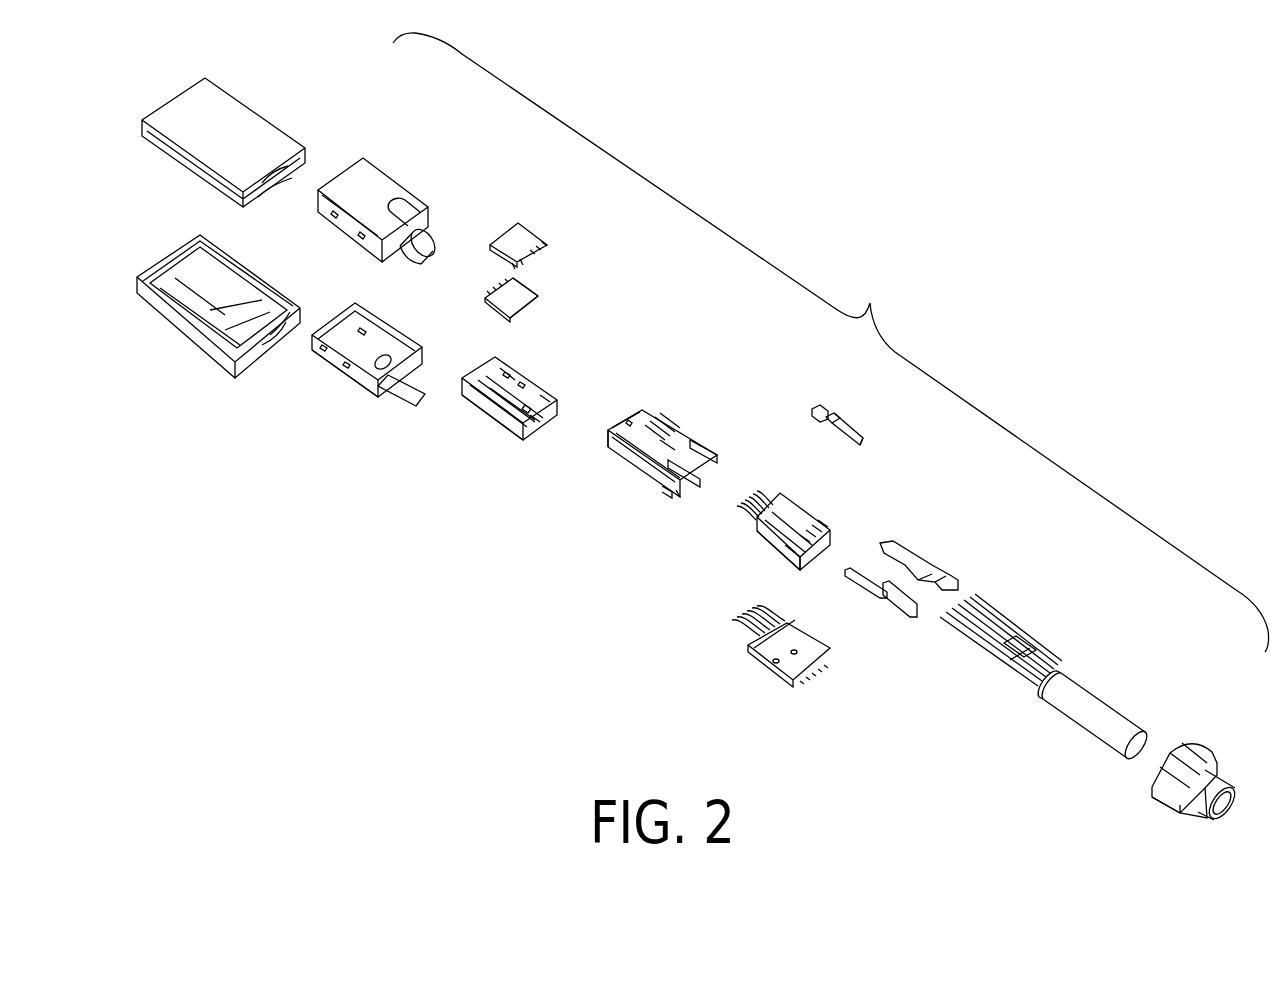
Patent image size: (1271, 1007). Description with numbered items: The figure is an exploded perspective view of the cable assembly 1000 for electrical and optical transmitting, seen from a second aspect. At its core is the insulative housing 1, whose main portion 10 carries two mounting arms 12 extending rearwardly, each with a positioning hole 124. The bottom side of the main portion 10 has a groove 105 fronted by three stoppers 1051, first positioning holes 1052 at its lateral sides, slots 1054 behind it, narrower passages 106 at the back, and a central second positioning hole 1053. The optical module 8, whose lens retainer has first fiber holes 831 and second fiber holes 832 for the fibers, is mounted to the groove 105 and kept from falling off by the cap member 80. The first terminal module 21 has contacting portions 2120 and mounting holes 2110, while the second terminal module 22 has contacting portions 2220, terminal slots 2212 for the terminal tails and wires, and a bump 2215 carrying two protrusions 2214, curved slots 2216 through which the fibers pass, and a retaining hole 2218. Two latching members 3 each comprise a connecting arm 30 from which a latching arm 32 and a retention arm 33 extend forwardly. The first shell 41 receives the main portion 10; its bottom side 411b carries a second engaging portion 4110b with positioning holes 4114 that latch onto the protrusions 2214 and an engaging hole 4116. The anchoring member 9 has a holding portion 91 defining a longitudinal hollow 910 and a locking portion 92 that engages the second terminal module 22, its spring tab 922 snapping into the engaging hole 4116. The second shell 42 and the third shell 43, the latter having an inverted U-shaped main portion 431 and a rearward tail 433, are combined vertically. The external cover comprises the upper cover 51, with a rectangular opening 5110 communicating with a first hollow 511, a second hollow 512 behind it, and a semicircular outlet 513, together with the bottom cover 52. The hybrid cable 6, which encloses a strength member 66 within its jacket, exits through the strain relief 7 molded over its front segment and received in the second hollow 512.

The cable assembly 1000 is at (831, 342).
The bottom cover 52 is at (268, 95).
The second shell 42 is at (408, 170).
The upper cover 51 is at (204, 304).
The rectangular shaped opening 5110 is at (163, 272).
The first hollow 511 is at (182, 292).
The second hollow 512 is at (250, 330).
The semicircular shaped outlet 513 is at (263, 348).
The third shell 43 is at (376, 373).
The inverted U-shaped main portion 431 is at (345, 368).
The tail 433 is at (397, 393).
The cap member 80 is at (540, 226).
The optical module 8 is at (540, 295).
The first fiber holes 831 is at (530, 300).
The second fiber holes 832 is at (530, 312).
The first shell 41 is at (513, 418).
The engaging hole 4116 is at (527, 410).
The bottom side 411b is at (503, 392).
The positioning holes 4114 is at (530, 412).
The second engaging portion 4110b is at (538, 424).
The insulative housing 1 is at (672, 448).
The main portion 10 is at (672, 448).
The groove 105 is at (640, 432).
The stoppers 1051 is at (630, 420).
The first positioning holes 1052 is at (652, 412).
The slots 1054 is at (670, 432).
The passages 106 is at (682, 445).
The second positioning hole 1053 is at (682, 468).
The mounting arms 12 is at (662, 486).
The positioning hole 124 is at (678, 492).
The anchoring member 9 is at (880, 403).
The spring tab 922 is at (818, 408).
The locking portion 92 is at (834, 415).
The holding portion 91 is at (852, 432).
The longitudinal hollow 910 is at (860, 438).
The second terminal module 22 is at (804, 540).
The curved slots 2216 is at (832, 514).
The retaining hole 2218 is at (815, 535).
The contacting portions 2220 is at (748, 508).
The protrusions 2214 is at (772, 527).
The bump 2215 is at (790, 544).
The terminal slots 2212 is at (808, 552).
The first terminal module 21 is at (737, 673).
The mounting holes 2110 is at (772, 654).
The contacting portions 2120 is at (735, 634).
The latching members 3 is at (940, 550).
The connecting arm 30 is at (888, 633).
The latching arm 32 is at (868, 582).
The retention arm 33 is at (890, 602).
The cable 6 is at (1045, 673).
The strength member 66 is at (1015, 642).
The strain relief 7 is at (1220, 742).